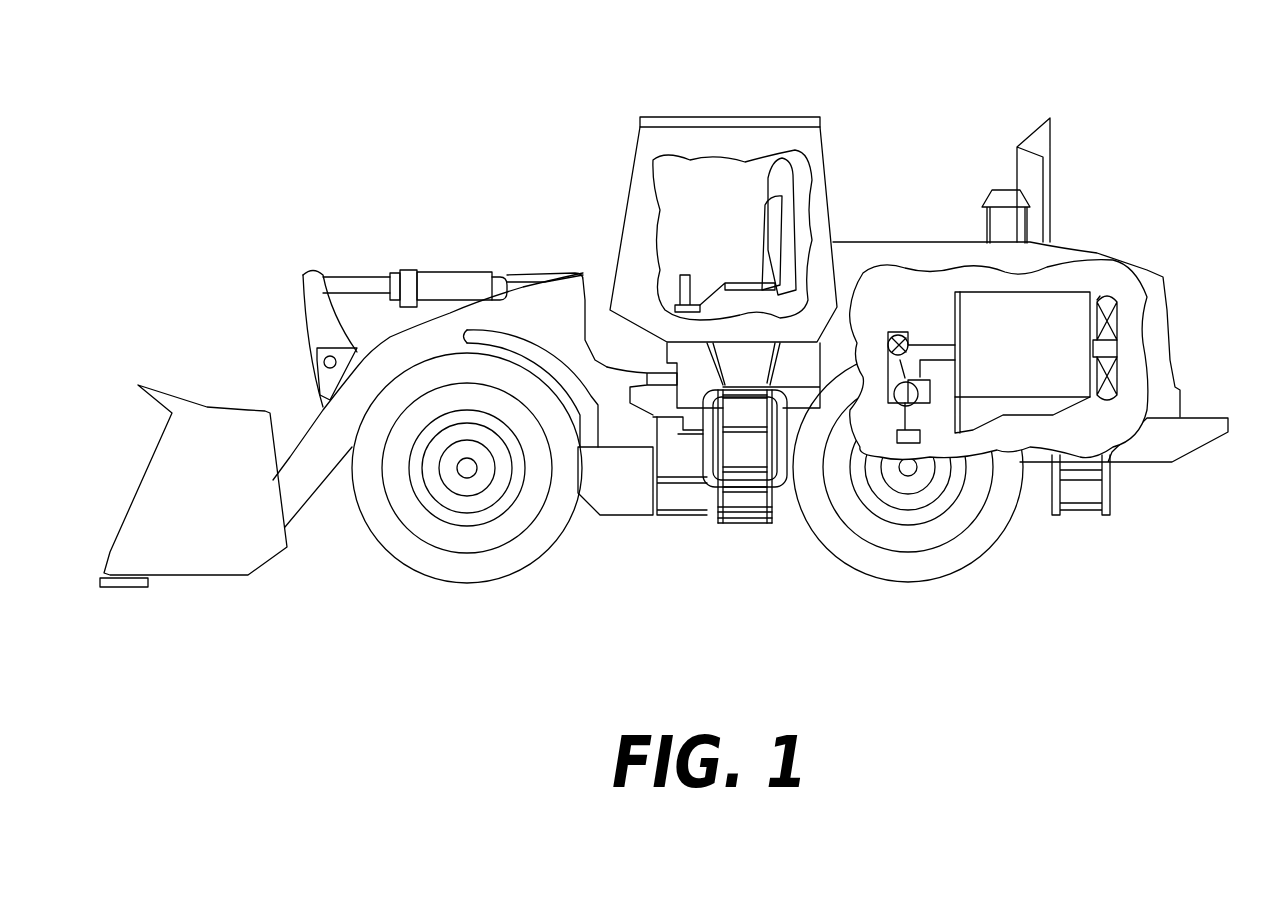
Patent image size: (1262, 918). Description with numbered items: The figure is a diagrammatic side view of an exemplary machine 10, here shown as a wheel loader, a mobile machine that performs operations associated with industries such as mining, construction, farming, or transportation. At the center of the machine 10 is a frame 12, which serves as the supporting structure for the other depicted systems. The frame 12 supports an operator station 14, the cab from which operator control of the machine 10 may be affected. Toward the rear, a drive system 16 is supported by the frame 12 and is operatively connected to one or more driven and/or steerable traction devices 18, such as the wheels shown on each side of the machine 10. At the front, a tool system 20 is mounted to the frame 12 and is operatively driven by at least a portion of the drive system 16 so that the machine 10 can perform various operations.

The machine 10 is at (963, 97).
The frame 12 is at (625, 490).
The operator station 14 is at (703, 165).
The drive system 16 is at (910, 292).
The traction devices 18 is at (420, 557).
The tool system 20 is at (334, 236).